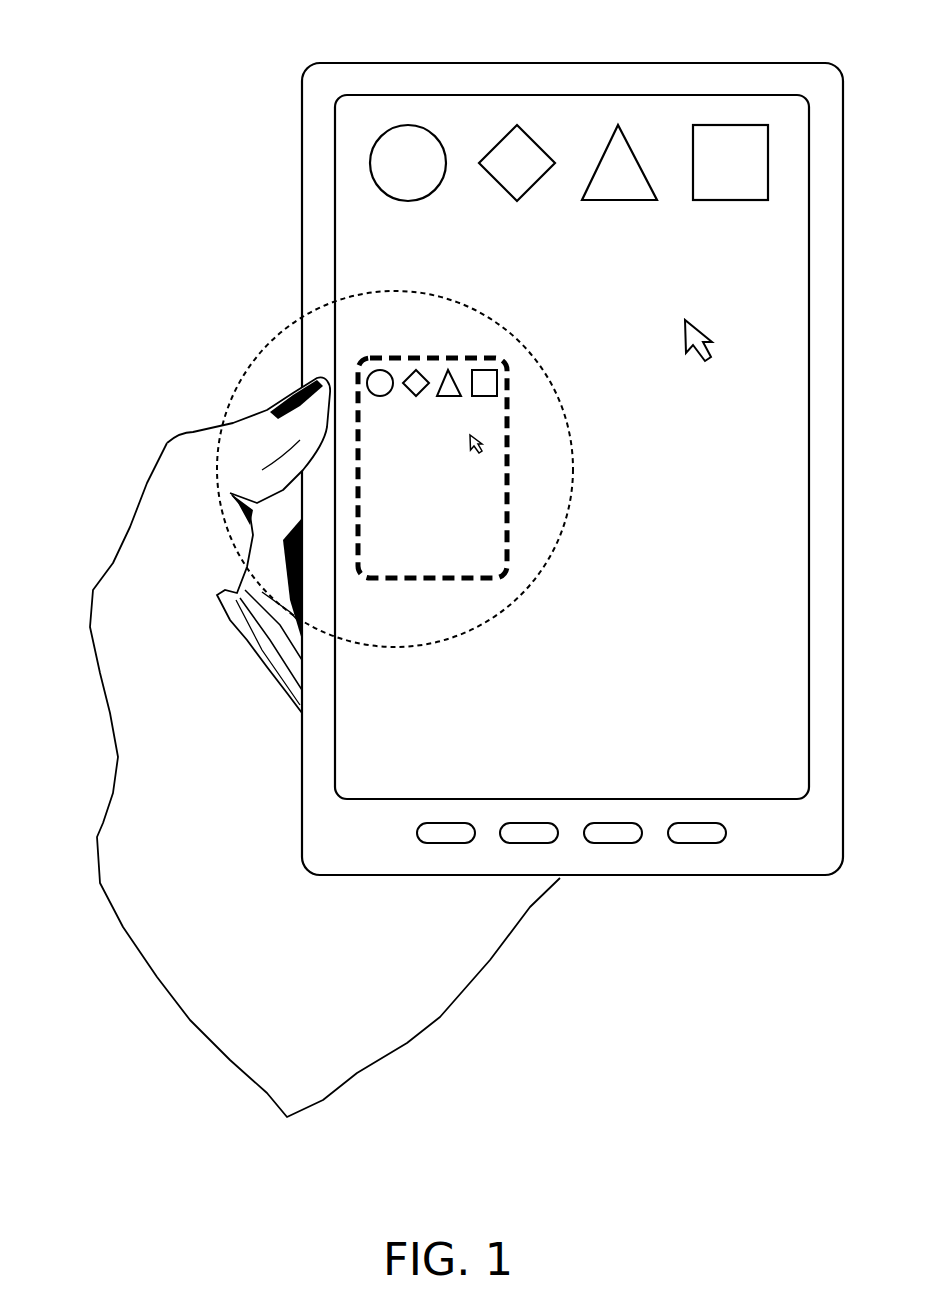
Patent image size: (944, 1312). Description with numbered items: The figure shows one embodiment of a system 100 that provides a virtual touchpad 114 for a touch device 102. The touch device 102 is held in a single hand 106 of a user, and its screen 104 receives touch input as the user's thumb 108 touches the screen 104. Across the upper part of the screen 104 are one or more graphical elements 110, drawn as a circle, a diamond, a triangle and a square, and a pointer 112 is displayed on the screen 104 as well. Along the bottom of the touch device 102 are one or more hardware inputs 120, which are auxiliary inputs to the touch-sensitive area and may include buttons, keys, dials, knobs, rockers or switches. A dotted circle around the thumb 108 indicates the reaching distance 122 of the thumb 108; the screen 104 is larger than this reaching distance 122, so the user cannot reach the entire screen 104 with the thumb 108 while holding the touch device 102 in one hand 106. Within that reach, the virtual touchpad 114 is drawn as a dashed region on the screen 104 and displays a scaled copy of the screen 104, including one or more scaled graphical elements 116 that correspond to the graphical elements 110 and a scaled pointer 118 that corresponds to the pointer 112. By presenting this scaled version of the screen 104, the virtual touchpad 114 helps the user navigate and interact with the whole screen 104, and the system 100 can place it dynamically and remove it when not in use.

The system 100 is at (92, 52).
The touch device 102 is at (316, 72).
The screen 104 is at (392, 100).
The hand 106 is at (172, 777).
The thumb 108 is at (300, 398).
The graphical elements 110 is at (380, 162).
The pointer 112 is at (686, 320).
The virtual touchpad 114 is at (444, 357).
The scaled graphical elements 116 is at (374, 376).
The scaled pointer 118 is at (472, 438).
The hardware inputs 120 is at (428, 833).
The reaching distance 122 is at (418, 646).